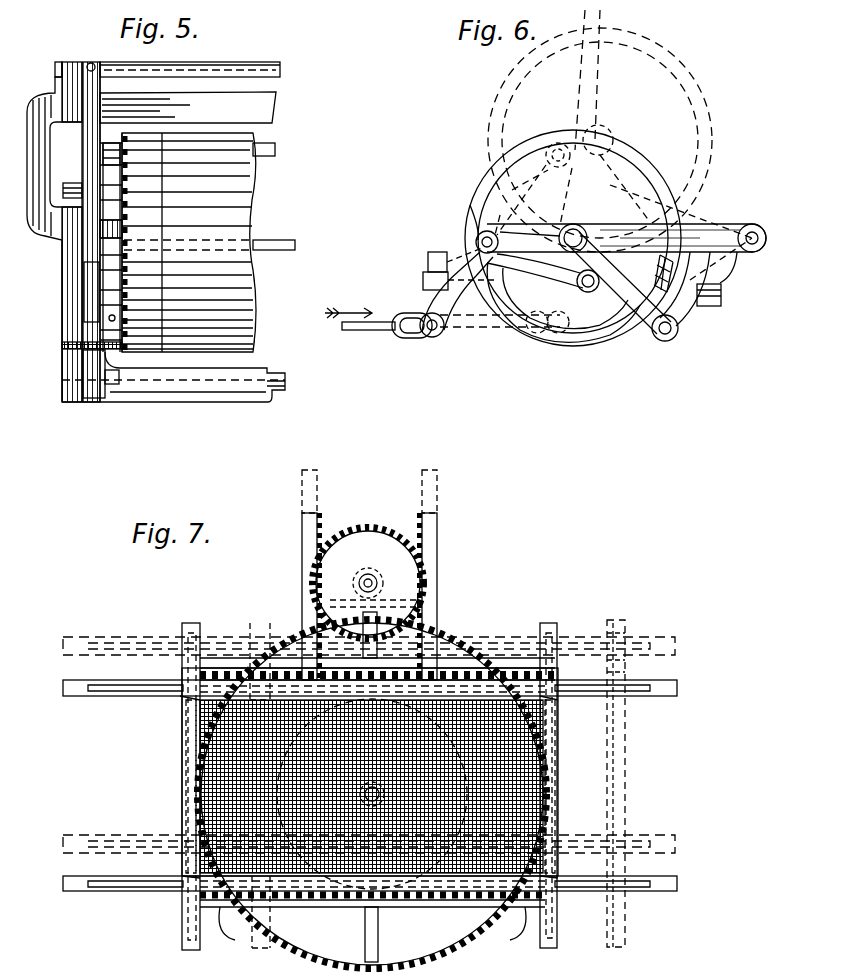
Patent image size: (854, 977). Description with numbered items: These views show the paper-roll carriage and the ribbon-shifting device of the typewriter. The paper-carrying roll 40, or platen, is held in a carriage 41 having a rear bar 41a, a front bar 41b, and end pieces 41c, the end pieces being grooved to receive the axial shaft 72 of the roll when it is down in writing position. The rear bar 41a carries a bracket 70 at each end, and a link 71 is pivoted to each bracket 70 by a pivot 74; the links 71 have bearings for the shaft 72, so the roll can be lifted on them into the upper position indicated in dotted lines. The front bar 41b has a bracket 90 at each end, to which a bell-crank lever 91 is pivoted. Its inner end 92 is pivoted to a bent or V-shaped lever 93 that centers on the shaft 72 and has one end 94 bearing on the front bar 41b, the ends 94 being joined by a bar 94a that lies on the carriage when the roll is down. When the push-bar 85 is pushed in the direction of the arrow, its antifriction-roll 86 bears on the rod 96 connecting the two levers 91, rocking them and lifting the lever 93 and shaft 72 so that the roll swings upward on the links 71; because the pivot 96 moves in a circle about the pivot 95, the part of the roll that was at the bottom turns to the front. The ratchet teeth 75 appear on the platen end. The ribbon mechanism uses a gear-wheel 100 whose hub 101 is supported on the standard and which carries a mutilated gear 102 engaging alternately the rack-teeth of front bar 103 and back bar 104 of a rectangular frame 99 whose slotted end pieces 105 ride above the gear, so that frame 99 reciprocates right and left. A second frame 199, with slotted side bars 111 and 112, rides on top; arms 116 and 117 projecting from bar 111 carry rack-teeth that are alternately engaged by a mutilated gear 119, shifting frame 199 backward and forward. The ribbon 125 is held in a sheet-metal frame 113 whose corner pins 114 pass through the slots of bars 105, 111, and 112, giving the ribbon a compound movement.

In FIG. 5, the paper-carrying roll 40 is at (189, 242).
In FIG. 6, the carriage 41 is at (716, 306).
In FIG. 5, the rear bar of carriage 41a is at (188, 107).
In FIG. 5, the front bar of carriage 41b is at (173, 388).
In FIG. 6, the front bar of carriage 41b is at (423, 278).
In FIG. 5, the end pieces of carriage 41c is at (62, 263).
In FIG. 6, the bracket 70 is at (607, 238).
In FIG. 5, the link 71 is at (82, 146).
In FIG. 6, the link 71 is at (626, 238).
In FIG. 5, the axial shaft of paper-roller 72 is at (295, 246).
In FIG. 6, the axial shaft of paper-roller 72 is at (576, 230).
In FIG. 6, the pivot 74 is at (756, 226).
In FIG. 5, the ratchet teeth 75 is at (111, 243).
In FIG. 6, the push-bar 85 is at (360, 329).
In FIG. 6, the antifriction-roll 86 is at (414, 335).
In FIG. 6, the bracket 90 is at (480, 235).
In FIG. 5, the bell-crank lever 91 is at (94, 374).
In FIG. 6, the bell-crank lever 91 is at (457, 292).
In FIG. 5, the inner end of bell-crank lever 92 is at (92, 292).
In FIG. 6, the inner end of bell-crank lever 92 is at (543, 273).
In FIG. 6, the V-shaped lever 93 is at (619, 283).
In FIG. 5, the end of V-shaped lever 94 is at (112, 315).
In FIG. 6, the end of V-shaped lever 94 is at (530, 244).
In FIG. 5, the connecting bar 94a is at (118, 382).
In FIG. 6, the connecting bar 94a is at (437, 252).
In FIG. 6, the pivot 95 is at (478, 240).
In FIG. 6, the rod 96 is at (438, 335).
In FIG. 6, the rectangular frame 99 is at (672, 329).
In FIG. 7, the rectangular frame 99 is at (312, 908).
In FIG. 7, the gear-wheel 100 is at (482, 648).
In FIG. 7, the hub or inner rim 101 is at (372, 692).
In FIG. 7, the mutilated gear 102 is at (412, 900).
In FIG. 7, the front bar 103 is at (526, 908).
In FIG. 7, the back bar 104 is at (566, 660).
In FIG. 7, the end pieces 105 is at (191, 625).
In FIG. 7, the slotted side bar 111 is at (665, 686).
In FIG. 7, the slotted side bar 112 is at (664, 885).
In FIG. 7, the ribbon frame 113 is at (552, 742).
In FIG. 7, the pins 114 is at (183, 700).
In FIG. 7, the projecting arm 116 is at (450, 575).
In FIG. 7, the projecting arm 117 is at (302, 530).
In FIG. 7, the mutilated gear 119 is at (368, 593).
In FIG. 7, the ribbon 125 is at (552, 772).
In FIG. 7, the second frame 199 is at (182, 806).